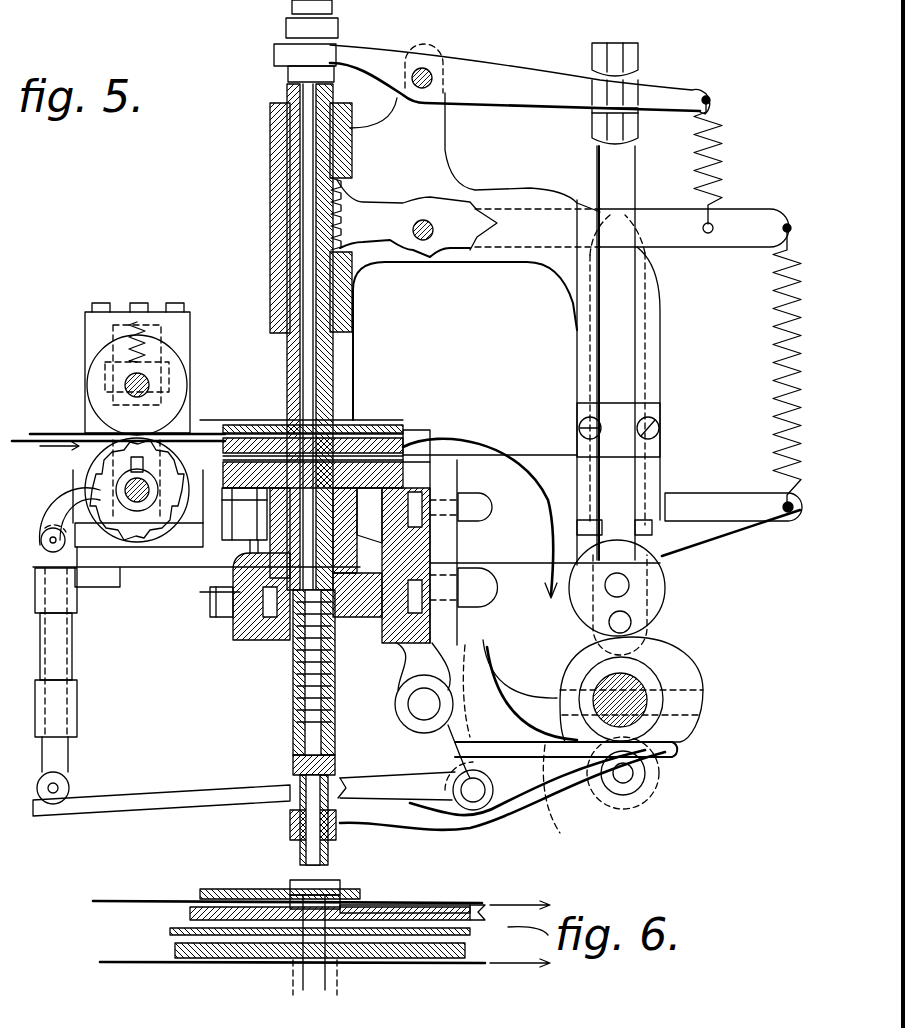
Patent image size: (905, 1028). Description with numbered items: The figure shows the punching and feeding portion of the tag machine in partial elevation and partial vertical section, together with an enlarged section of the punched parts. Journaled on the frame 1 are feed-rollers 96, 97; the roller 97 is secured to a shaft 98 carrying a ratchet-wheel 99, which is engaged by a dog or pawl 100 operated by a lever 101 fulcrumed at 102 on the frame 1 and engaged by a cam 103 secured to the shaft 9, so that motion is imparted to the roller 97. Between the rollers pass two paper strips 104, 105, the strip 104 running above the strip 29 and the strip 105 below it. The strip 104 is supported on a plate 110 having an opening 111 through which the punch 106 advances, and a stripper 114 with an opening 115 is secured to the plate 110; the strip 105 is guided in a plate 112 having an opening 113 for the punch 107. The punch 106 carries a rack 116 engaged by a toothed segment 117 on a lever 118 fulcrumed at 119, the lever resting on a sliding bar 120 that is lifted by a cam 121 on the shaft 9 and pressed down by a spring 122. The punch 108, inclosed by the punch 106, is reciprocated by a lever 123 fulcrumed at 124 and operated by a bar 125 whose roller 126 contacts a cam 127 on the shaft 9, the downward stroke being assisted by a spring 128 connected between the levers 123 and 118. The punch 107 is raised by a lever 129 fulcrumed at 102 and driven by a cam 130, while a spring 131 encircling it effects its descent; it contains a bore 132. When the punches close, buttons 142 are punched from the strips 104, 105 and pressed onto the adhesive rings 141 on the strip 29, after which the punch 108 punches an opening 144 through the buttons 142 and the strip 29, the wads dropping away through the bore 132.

In FIG. 5, the frame 1 is at (268, 186).
In FIG. 5, the shaft 9 is at (598, 685).
In FIG. 5, the strip 29 is at (421, 444).
In FIG. 6, the strip 29 is at (462, 932).
In FIG. 5, the feed-roller 96 is at (100, 360).
In FIG. 5, the feed-roller 97 is at (96, 478).
In FIG. 5, the shaft 98 is at (140, 500).
In FIG. 5, the ratchet-wheel 99 is at (130, 503).
In FIG. 5, the dog or pawl 100 is at (75, 505).
In FIG. 5, the lever 101 is at (164, 806).
In FIG. 5, the fulcrum 102 is at (480, 808).
In FIG. 5, the cam 103 is at (650, 722).
In FIG. 5, the strip 104 is at (46, 435).
In FIG. 6, the strip 104 is at (104, 900).
In FIG. 5, the strip 105 is at (22, 442).
In FIG. 6, the strip 105 is at (118, 964).
In FIG. 5, the punch 106 is at (290, 148).
In FIG. 6, the punch 106 is at (242, 893).
In FIG. 5, the punch 107 is at (222, 493).
In FIG. 6, the punch 107 is at (330, 983).
In FIG. 5, the punch 108 is at (297, 99).
In FIG. 6, the punch 108 is at (306, 892).
In FIG. 5, the plate 110 is at (382, 430).
In FIG. 6, the plate 110 is at (447, 905).
In FIG. 5, the opening 111 is at (360, 425).
In FIG. 6, the opening 111 is at (385, 905).
In FIG. 5, the plate 112 is at (450, 446).
In FIG. 6, the plate 112 is at (405, 953).
In FIG. 5, the opening 113 is at (455, 440).
In FIG. 6, the opening 113 is at (398, 928).
In FIG. 5, the stripper 114 is at (278, 422).
In FIG. 6, the stripper 114 is at (228, 893).
In FIG. 5, the opening 115 is at (300, 420).
In FIG. 6, the opening 115 is at (340, 893).
In FIG. 5, the rack 116 is at (338, 190).
In FIG. 5, the toothed segment 117 is at (340, 217).
In FIG. 5, the lever 118 is at (765, 210).
In FIG. 5, the fulcrum 119 is at (424, 218).
In FIG. 5, the sliding bar 120 is at (648, 294).
In FIG. 5, the cam 121 is at (672, 656).
In FIG. 5, the spring 122 is at (780, 380).
In FIG. 5, the lever 123 is at (372, 40).
In FIG. 5, the fulcrum 124 is at (428, 70).
In FIG. 5, the bar 125 is at (617, 42).
In FIG. 5, the roller 126 is at (665, 590).
In FIG. 5, the cam 127 is at (668, 652).
In FIG. 5, the spring 128 is at (718, 150).
In FIG. 5, the lever 129 is at (402, 826).
In FIG. 5, the cam 130 is at (565, 797).
In FIG. 5, the spring 131 is at (296, 670).
In FIG. 5, the bore 132 is at (330, 740).
In FIG. 6, the bore 132 is at (300, 992).
In FIG. 6, the rings 141 is at (394, 962).
In FIG. 6, the buttons 142 is at (230, 938).
In FIG. 6, the opening 144 is at (340, 975).